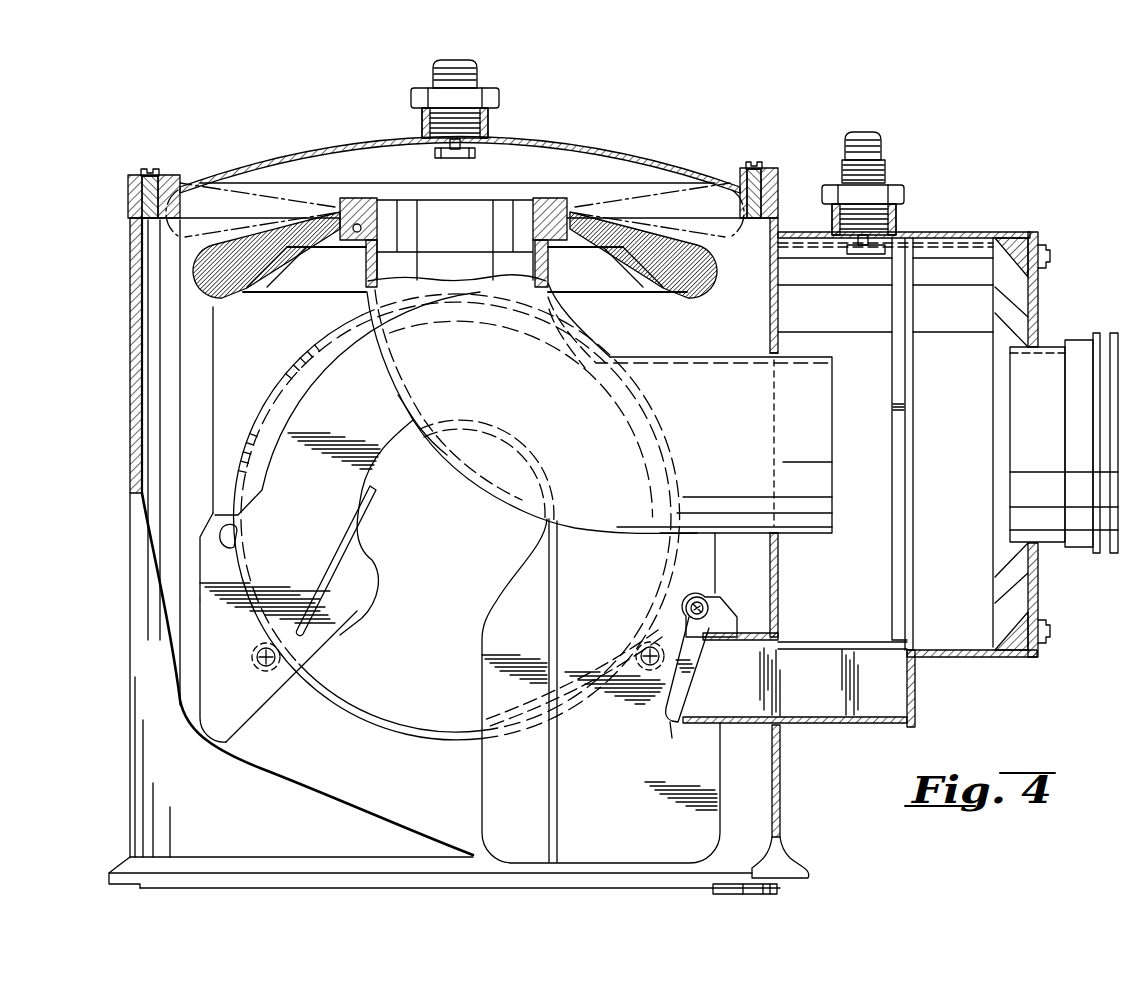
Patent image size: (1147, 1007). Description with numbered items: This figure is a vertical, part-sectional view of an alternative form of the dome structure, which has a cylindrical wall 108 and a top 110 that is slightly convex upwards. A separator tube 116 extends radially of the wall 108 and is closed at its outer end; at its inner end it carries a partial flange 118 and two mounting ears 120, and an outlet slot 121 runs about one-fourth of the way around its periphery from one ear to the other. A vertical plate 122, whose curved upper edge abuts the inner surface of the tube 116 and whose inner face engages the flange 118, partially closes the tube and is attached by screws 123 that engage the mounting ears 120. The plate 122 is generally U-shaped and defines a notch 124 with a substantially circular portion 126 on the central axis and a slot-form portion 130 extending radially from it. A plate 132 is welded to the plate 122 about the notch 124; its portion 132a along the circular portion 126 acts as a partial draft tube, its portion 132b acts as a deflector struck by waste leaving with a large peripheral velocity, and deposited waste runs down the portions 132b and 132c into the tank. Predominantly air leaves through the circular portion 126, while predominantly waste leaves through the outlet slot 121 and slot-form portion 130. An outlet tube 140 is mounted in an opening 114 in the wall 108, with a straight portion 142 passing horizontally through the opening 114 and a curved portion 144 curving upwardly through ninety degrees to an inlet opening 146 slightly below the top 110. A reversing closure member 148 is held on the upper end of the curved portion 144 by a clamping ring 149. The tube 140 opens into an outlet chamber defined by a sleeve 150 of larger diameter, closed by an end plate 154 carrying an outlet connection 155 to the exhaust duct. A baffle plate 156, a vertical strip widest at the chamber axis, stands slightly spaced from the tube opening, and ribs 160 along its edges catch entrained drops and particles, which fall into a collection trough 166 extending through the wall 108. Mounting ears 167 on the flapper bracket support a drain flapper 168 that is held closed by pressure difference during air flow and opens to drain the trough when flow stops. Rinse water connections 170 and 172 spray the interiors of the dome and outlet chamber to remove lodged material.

The cylindrical wall 108 is at (130, 383).
The top 110 is at (532, 142).
The circular opening 114 is at (770, 362).
The separator tube 116 is at (236, 531).
The partial flange 118 is at (290, 388).
The mounting ears 120 is at (255, 652).
The outlet slot 121 is at (388, 740).
The vertical plate 122 is at (244, 722).
The screws 123 is at (258, 665).
The notch 124 is at (294, 686).
The circular portion 126 is at (424, 502).
The slot-form portion 130 is at (419, 690).
The plate 132 is at (568, 783).
The plate portion 132a is at (415, 428).
The deflector plate portion 132b is at (325, 573).
The plate portion 132c is at (548, 812).
The outlet tube 140 is at (487, 497).
The straight portion 142 is at (745, 357).
The curved portion 144 is at (405, 386).
The inlet opening 146 is at (497, 207).
The reversing closure member 148 is at (681, 292).
The clamping ring 149 is at (348, 212).
The sleeve 150 is at (970, 658).
The end plate 154 is at (1038, 306).
The outlet connection 155 is at (1083, 535).
The baffle plate 156 is at (913, 383).
The ribs 160 is at (892, 378).
The collection trough 166 is at (852, 713).
The mounting ears 167 is at (724, 612).
The drain flapper 168 is at (670, 730).
The rinse water connection 170 is at (478, 78).
The rinse water connection 172 is at (882, 150).